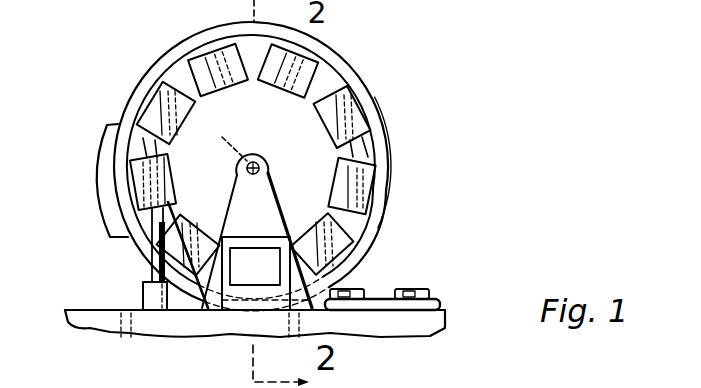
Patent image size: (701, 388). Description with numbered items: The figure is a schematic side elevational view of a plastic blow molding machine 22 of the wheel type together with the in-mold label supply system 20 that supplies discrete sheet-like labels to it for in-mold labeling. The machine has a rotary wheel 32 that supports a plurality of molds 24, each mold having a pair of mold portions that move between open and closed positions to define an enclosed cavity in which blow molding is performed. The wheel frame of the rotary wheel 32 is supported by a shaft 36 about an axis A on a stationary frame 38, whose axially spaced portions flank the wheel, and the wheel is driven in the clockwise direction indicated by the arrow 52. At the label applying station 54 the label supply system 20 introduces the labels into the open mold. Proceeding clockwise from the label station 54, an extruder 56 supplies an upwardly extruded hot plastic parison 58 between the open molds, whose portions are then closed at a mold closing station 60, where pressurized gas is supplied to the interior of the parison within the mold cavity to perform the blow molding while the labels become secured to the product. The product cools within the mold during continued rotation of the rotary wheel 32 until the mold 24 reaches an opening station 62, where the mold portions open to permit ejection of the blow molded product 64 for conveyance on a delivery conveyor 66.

The in-mold label supply system 20 is at (267, 230).
The plastic blow molding machine 22 is at (390, 82).
The mold 24 is at (207, 65).
The rotary wheel 32 is at (390, 147).
The shaft 36 is at (284, 180).
The stationary frame 38 is at (218, 203).
The arrow 52 is at (268, 135).
The label applying station 54 is at (205, 313).
The extruder 56 is at (143, 294).
The hot plastic parison 58 is at (147, 242).
The mold closing station 60 is at (104, 175).
The opening station 62 is at (360, 275).
The blow molded product 64 is at (357, 302).
The delivery conveyor 66 is at (449, 299).
The axis A is at (225, 139).